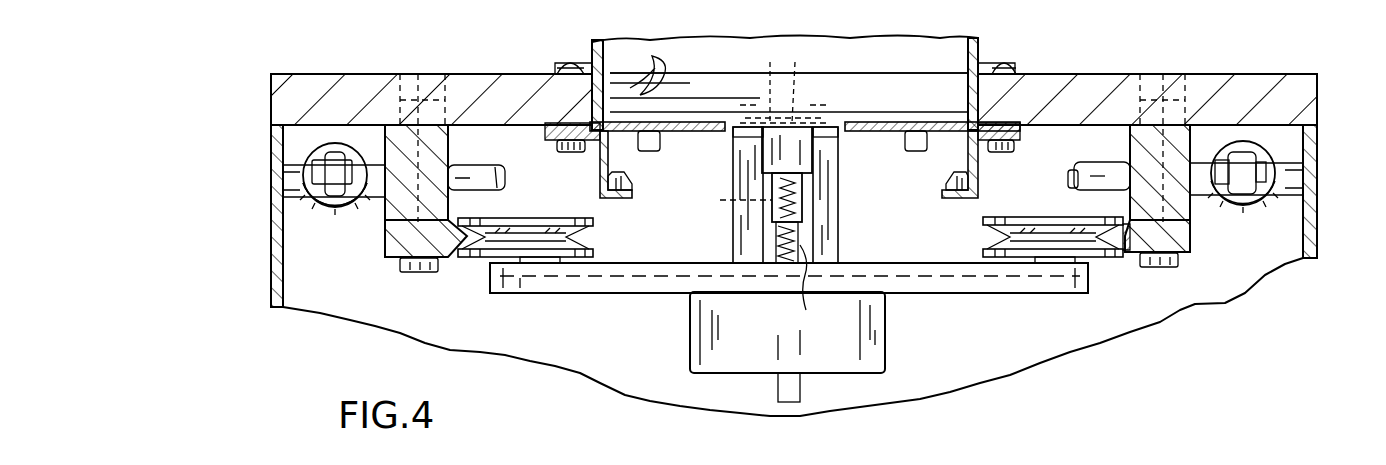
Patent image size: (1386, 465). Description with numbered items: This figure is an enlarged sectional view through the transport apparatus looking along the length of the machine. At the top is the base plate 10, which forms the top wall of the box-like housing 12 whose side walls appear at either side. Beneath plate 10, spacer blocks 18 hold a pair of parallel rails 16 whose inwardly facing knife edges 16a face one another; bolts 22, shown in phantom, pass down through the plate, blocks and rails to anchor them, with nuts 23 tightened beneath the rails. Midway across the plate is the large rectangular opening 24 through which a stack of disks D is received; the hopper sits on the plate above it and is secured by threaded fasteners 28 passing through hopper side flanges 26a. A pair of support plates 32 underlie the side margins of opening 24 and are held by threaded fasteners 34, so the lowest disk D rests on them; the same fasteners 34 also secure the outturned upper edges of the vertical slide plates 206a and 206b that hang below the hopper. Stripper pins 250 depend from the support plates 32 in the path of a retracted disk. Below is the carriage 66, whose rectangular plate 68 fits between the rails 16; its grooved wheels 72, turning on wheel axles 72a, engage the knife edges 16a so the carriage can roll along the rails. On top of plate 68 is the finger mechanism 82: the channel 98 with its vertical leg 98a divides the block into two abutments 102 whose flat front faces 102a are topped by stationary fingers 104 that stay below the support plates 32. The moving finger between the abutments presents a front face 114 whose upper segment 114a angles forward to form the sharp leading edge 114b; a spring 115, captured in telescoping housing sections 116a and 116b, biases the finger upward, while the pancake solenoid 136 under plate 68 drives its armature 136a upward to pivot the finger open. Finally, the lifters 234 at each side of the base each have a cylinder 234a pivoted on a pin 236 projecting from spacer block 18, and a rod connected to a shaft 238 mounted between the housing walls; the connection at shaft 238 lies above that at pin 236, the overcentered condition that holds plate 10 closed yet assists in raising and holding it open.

The plate 10 is at (283, 108).
The housing 12 is at (271, 244).
The rails 16 is at (385, 260).
The knife edges 16a is at (455, 257).
The spacer blocks 18 is at (448, 136).
The bolts 22 is at (420, 78).
The nut 23 is at (412, 272).
The opening 24 is at (968, 80).
The hopper side flanges 26a is at (552, 70).
The threaded fasteners 28 is at (570, 62).
The support plates 32 is at (690, 122).
The threaded fasteners 34 is at (568, 152).
The carriage 66 is at (588, 324).
The plate 68 is at (503, 293).
The grooved wheels 72 is at (500, 218).
The wheel axles 72a is at (545, 265).
The finger mechanism 82 is at (710, 187).
The channel 98 is at (740, 182).
The vertical leg 98a is at (802, 200).
The abutments 102 is at (733, 220).
The front faces 102a is at (733, 244).
The stationary fingers 104 is at (740, 118).
The front face 114 is at (812, 147).
The segment 114a is at (810, 82).
The leading edge 114b is at (776, 82).
The spring 115 is at (738, 198).
The housing section 116a is at (829, 283).
The housing section 116b is at (802, 215).
The pancake solenoid 136 is at (690, 322).
The solenoid armature 136a is at (778, 394).
The slide plate 206a is at (593, 192).
The slide plate 206b is at (625, 200).
The lifters 234 is at (240, 200).
The cylinder 234a is at (330, 215).
The pin 236 is at (365, 205).
The shaft 238 is at (468, 172).
The stripper pins 250 is at (660, 144).
The disks D is at (789, 77).